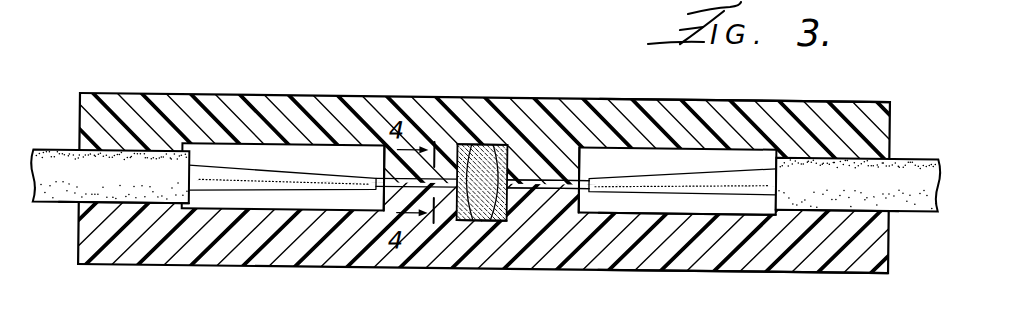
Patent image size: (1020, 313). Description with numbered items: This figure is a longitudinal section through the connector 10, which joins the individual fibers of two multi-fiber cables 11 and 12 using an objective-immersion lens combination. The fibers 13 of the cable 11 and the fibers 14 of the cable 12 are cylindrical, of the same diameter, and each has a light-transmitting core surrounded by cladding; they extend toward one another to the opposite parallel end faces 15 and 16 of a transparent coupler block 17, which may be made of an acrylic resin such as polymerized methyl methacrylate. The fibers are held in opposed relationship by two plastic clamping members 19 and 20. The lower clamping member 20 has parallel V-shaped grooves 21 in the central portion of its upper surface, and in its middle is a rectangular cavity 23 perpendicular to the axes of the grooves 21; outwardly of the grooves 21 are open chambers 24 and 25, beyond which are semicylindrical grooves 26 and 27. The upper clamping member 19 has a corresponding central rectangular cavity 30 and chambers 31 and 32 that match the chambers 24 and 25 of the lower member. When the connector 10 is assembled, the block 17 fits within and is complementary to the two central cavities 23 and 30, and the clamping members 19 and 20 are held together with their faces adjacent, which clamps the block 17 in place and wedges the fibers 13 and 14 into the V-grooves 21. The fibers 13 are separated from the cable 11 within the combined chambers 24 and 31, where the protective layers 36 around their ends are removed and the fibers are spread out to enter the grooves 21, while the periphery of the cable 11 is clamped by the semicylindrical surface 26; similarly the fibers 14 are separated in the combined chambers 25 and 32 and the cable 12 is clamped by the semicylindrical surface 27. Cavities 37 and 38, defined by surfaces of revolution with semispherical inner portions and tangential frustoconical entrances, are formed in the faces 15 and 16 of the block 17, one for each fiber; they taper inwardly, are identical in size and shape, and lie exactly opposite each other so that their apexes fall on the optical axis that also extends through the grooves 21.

The connector 10 is at (588, 76).
The cable 11 is at (58, 148).
The cable 12 is at (905, 148).
The fibers 13 is at (388, 172).
The fibers 14 is at (586, 172).
The end face 15 is at (468, 217).
The end face 16 is at (518, 190).
The transparent coupler block 17 is at (486, 140).
The clamping member 19 is at (733, 92).
The clamping member 20 is at (690, 265).
The V-shaped grooves 21 is at (386, 204).
The rectangular cavity 23 is at (481, 217).
The open chamber 24 is at (292, 210).
The open chamber 25 is at (665, 214).
The semicylindrical groove 26 is at (92, 200).
The semicylindrical groove 27 is at (872, 204).
The rectangular cavity 30 is at (500, 140).
The chamber 31 is at (305, 142).
The chamber 32 is at (672, 142).
The protective layers 36 is at (255, 110).
The cavity 37 is at (470, 140).
The cavity 38 is at (508, 162).